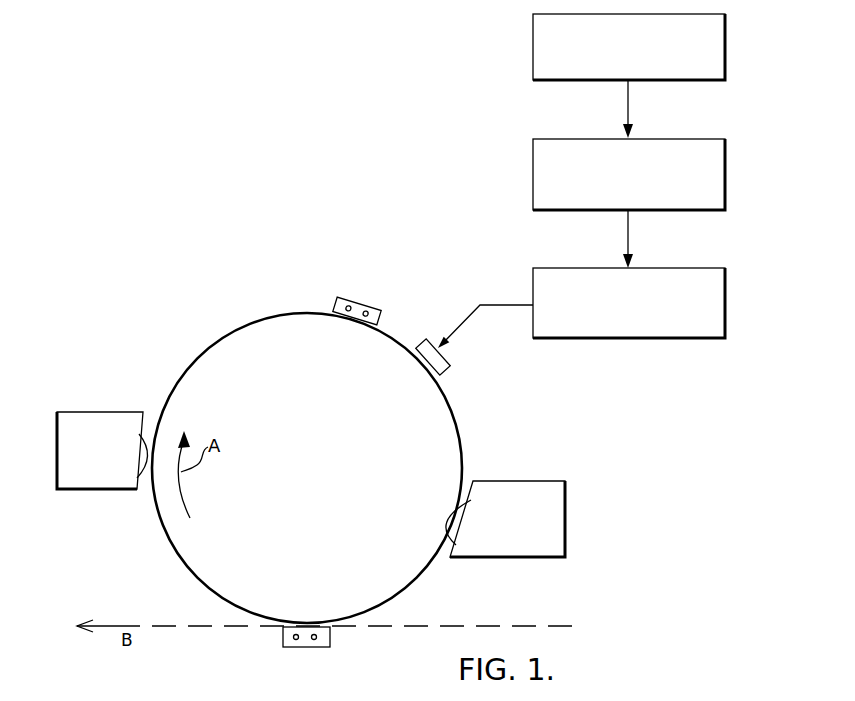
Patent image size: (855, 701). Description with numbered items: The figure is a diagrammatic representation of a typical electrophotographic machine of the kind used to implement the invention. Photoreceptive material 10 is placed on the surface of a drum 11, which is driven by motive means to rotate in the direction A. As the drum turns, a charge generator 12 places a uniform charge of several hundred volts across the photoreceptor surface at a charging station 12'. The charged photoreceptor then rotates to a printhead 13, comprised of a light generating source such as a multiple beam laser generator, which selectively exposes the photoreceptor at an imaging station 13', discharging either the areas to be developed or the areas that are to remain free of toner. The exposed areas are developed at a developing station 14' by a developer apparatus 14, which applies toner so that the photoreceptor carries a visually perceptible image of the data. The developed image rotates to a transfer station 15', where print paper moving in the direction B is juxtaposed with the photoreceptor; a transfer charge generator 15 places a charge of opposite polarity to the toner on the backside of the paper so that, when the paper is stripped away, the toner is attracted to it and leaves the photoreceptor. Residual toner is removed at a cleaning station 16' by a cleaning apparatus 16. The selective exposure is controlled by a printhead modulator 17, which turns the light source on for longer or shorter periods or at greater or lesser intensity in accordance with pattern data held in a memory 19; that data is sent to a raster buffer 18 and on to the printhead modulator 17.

The photoreceptive material 10 is at (240, 326).
The drum 11 is at (314, 511).
The charge generator 12 is at (369, 292).
The charging station 12' is at (332, 343).
The printhead 13 is at (462, 369).
The imaging station 13' is at (400, 384).
The developer apparatus 14 is at (505, 541).
The developing station 14' is at (425, 517).
The transfer charge generator 15 is at (330, 647).
The transfer station 15' is at (343, 595).
The cleaning apparatus 16 is at (102, 420).
The cleaning station 16' is at (189, 418).
The printhead modulator means 17 is at (533, 274).
The raster buffer 18 is at (533, 165).
The memory 19 is at (533, 47).